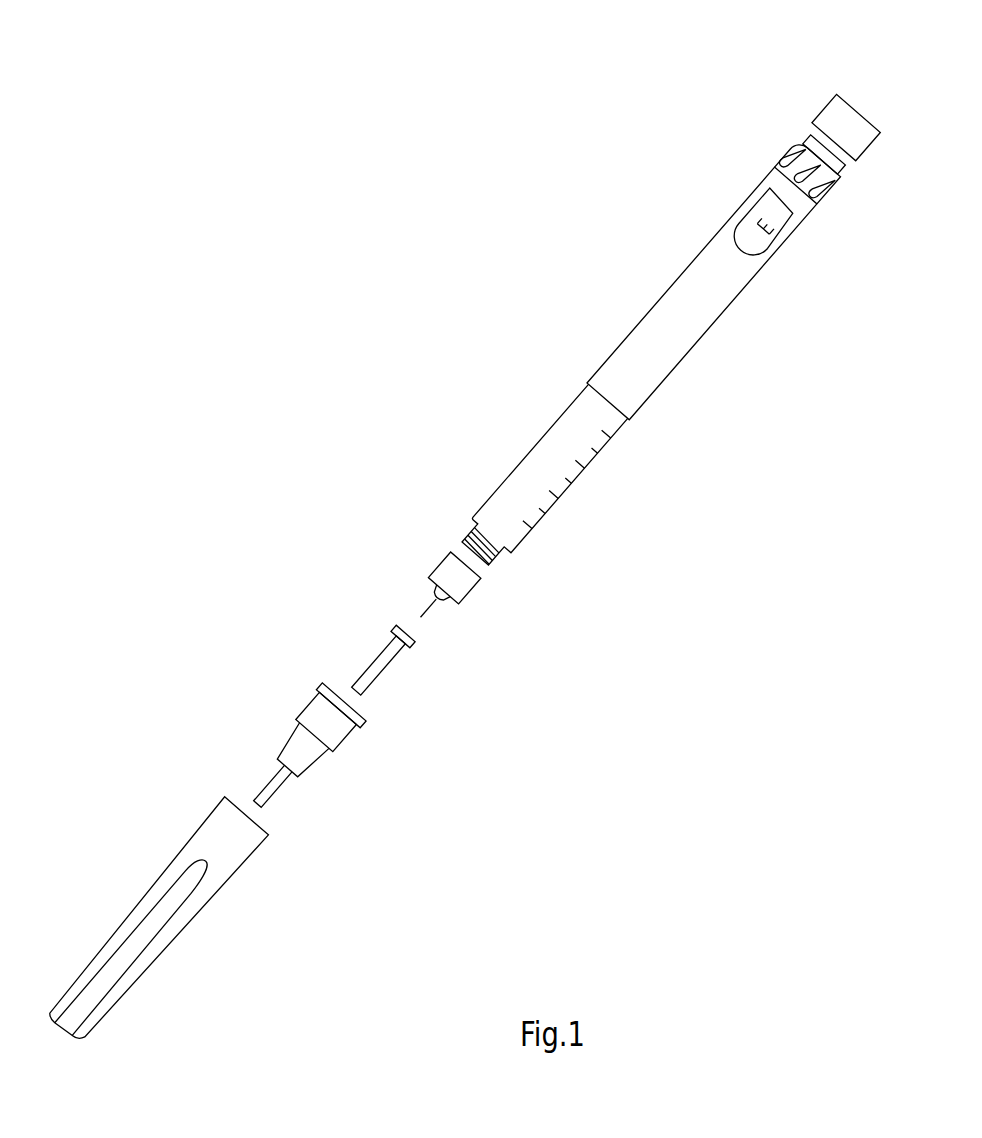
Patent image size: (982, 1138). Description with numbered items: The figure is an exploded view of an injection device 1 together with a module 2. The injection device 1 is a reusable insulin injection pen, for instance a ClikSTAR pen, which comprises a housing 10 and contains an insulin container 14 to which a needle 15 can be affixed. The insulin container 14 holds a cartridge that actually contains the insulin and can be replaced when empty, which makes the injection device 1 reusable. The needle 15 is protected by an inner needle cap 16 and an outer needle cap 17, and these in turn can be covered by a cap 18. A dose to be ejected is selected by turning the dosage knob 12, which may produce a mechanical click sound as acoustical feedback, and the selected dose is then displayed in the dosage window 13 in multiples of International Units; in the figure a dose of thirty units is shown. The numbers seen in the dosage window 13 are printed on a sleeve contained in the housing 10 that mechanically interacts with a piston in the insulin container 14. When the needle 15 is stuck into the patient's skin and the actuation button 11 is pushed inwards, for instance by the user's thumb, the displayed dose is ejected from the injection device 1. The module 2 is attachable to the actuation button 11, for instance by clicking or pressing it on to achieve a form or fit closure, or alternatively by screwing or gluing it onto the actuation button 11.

The injection device 1 is at (506, 296).
The module 2 is at (822, 97).
The housing 10 is at (668, 307).
The actuation button 11 is at (801, 142).
The dosage knob 12 is at (774, 145).
The dosage window 13 is at (750, 218).
The insulin container 14 is at (548, 450).
The needle 15 is at (450, 570).
The inner needle cap 16 is at (385, 655).
The outer needle cap 17 is at (315, 713).
The cap 18 is at (208, 835).